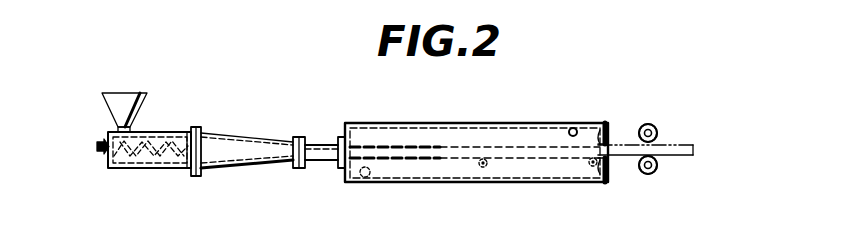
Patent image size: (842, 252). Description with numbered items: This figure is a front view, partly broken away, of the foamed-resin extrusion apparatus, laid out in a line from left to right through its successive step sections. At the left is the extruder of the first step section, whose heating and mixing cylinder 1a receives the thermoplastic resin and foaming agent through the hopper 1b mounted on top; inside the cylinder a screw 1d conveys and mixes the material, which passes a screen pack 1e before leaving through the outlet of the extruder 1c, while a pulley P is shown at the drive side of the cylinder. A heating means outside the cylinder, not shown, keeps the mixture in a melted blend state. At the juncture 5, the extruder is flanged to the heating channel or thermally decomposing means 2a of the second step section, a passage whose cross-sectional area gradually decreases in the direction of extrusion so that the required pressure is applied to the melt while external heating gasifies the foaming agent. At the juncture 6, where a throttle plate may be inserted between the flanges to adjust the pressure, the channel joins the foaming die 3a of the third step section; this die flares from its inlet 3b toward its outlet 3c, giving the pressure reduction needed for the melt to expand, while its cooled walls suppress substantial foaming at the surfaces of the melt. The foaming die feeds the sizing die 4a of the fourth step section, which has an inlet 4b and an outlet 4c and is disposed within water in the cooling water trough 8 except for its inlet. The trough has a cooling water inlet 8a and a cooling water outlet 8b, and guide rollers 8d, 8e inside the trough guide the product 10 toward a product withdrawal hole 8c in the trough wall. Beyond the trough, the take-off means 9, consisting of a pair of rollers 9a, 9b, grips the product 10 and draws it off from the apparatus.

The pulley P is at (98, 148).
The heating and mixing cylinder 1a is at (116, 168).
The hopper 1b is at (125, 98).
The outlet of the extruder 1c is at (190, 131).
The screw 1d is at (155, 168).
The screen pack 1e is at (178, 168).
The juncture 5 is at (199, 124).
The heating channel (thermally decomposing means) 2a is at (237, 167).
The juncture 6 is at (300, 134).
The foaming die 3a is at (318, 162).
The inlet of the foaming die 3b is at (312, 145).
The outlet of the foaming die 3c is at (333, 168).
The sizing die 4a is at (408, 152).
The inlet of the sizing die 4b is at (355, 148).
The outlet of the sizing die 4c is at (440, 152).
The cooling water trough 8 is at (458, 182).
The cooling water inlet 8a is at (377, 177).
The cooling water outlet 8b is at (573, 128).
The product withdrawal hole 8c is at (607, 167).
The guide roller 8d is at (487, 167).
The guide roller 8e is at (593, 170).
The take-off means 9 is at (690, 128).
The roller 9a is at (645, 124).
The roller 9b is at (655, 168).
The product 10 is at (692, 153).